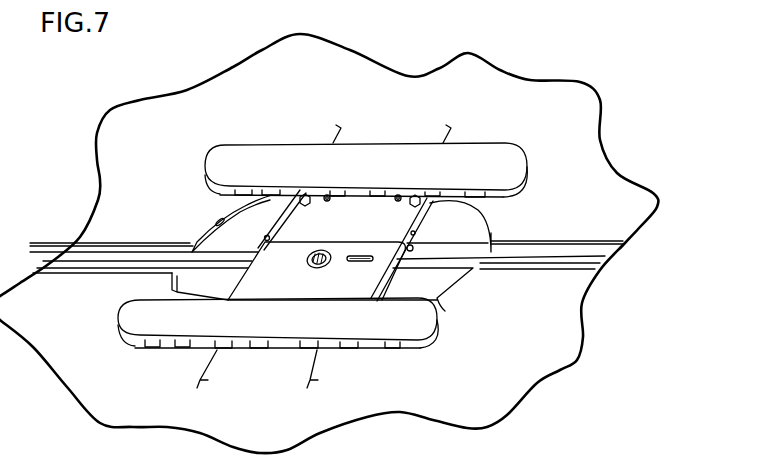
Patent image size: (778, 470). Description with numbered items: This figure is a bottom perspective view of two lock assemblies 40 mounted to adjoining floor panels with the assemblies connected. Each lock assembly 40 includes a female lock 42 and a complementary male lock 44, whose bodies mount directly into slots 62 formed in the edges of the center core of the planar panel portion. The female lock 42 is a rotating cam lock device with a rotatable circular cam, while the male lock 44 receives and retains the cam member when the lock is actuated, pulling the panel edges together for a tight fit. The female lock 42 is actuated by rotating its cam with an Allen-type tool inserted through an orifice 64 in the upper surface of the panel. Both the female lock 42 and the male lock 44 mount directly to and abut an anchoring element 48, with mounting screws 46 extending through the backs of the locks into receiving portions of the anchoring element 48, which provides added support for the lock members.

The lock assembly 40 is at (637, 118).
The female lock 42 is at (367, 278).
The male lock 44 is at (303, 230).
The mounting screw 46 is at (413, 197).
The anchoring element 48 is at (497, 157).
The slot 62 is at (477, 213).
The orifice 64 is at (307, 261).